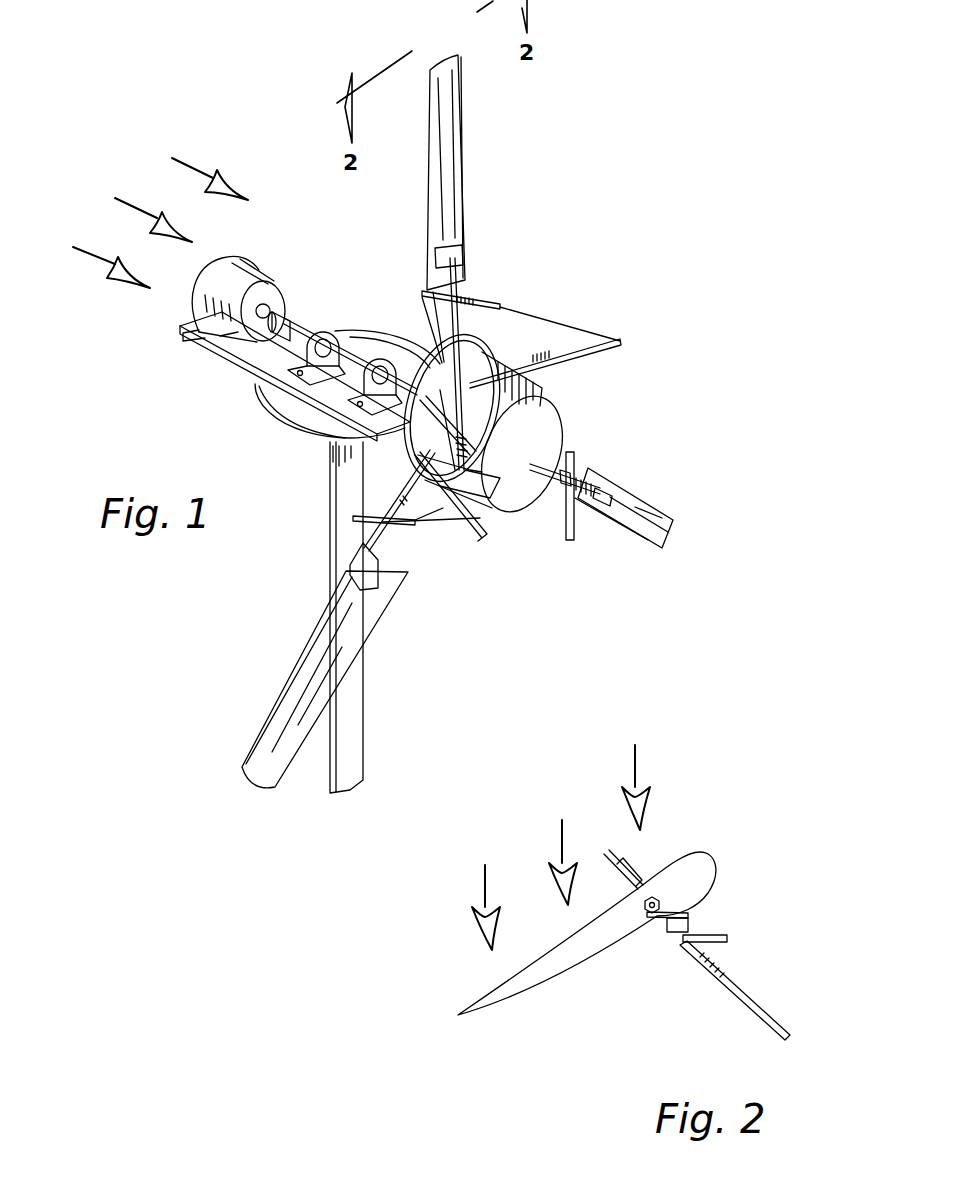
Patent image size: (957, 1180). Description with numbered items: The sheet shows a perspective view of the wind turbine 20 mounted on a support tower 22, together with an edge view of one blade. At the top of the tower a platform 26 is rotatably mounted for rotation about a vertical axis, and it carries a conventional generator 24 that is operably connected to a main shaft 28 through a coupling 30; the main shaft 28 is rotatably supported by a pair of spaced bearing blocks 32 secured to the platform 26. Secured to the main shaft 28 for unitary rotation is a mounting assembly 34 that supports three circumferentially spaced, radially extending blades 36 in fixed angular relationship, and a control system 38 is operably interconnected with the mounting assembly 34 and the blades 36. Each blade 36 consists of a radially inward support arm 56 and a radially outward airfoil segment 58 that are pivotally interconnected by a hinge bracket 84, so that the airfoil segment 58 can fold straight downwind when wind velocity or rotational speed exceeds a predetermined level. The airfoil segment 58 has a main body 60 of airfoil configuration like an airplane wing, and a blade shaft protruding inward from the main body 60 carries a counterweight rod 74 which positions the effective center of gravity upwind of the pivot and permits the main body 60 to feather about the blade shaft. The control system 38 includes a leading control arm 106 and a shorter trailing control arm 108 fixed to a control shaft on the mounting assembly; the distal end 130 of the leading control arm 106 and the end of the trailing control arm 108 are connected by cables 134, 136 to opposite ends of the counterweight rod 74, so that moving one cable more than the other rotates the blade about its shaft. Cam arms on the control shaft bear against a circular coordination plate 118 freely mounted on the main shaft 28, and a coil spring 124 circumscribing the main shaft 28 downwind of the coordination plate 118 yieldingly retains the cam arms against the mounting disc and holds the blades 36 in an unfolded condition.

In FIG. 1, the wind turbine 20 is at (584, 415).
In FIG. 1, the support tower 22 is at (350, 731).
In FIG. 1, the generator 24 is at (228, 273).
In FIG. 1, the platform 26 is at (260, 356).
In FIG. 1, the main shaft 28 is at (360, 336).
In FIG. 1, the coupling 30 is at (288, 310).
In FIG. 1, the bearing blocks 32 is at (322, 332).
In FIG. 1, the mounting assembly 34 is at (472, 326).
In FIG. 1, the blades 36 is at (480, 195).
In FIG. 1, the control system 38 is at (578, 397).
In FIG. 1, the support arm 56 is at (388, 532).
In FIG. 1, the airfoil segment 58 is at (472, 153).
In FIG. 2, the airfoil segment 58 is at (696, 852).
In FIG. 1, the main body 60 is at (360, 622).
In FIG. 1, the counterweight rod 74 is at (470, 297).
In FIG. 2, the counterweight rod 74 is at (727, 963).
In FIG. 2, the hinge bracket 84 is at (663, 953).
In FIG. 1, the leading control arm 106 is at (417, 461).
In FIG. 1, the trailing control arm 108 is at (481, 512).
In FIG. 1, the coordination plate 118 is at (524, 500).
In FIG. 1, the coil spring 124 is at (561, 453).
In FIG. 1, the distal end of leading control arm 130 is at (636, 316).
In FIG. 1, the cable 134 is at (510, 308).
In FIG. 1, the cable 136 is at (428, 343).